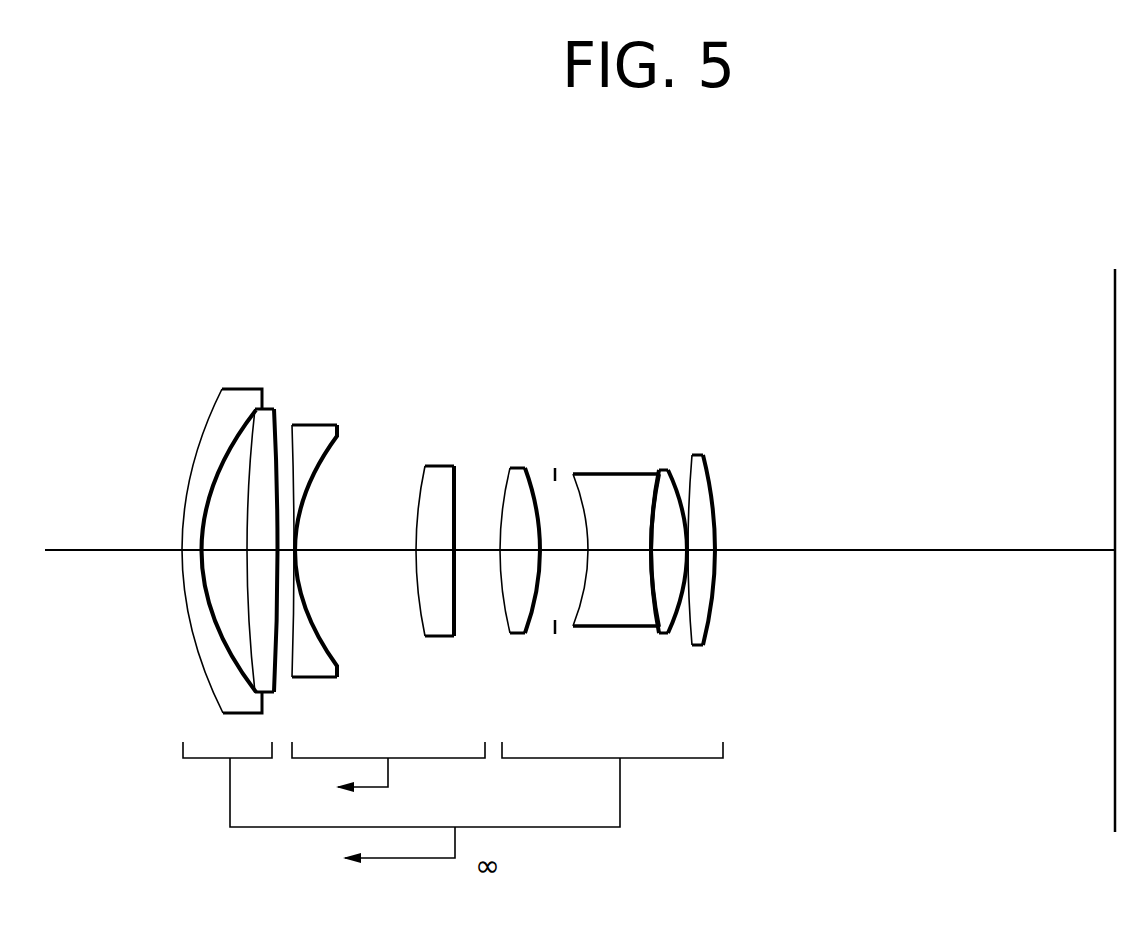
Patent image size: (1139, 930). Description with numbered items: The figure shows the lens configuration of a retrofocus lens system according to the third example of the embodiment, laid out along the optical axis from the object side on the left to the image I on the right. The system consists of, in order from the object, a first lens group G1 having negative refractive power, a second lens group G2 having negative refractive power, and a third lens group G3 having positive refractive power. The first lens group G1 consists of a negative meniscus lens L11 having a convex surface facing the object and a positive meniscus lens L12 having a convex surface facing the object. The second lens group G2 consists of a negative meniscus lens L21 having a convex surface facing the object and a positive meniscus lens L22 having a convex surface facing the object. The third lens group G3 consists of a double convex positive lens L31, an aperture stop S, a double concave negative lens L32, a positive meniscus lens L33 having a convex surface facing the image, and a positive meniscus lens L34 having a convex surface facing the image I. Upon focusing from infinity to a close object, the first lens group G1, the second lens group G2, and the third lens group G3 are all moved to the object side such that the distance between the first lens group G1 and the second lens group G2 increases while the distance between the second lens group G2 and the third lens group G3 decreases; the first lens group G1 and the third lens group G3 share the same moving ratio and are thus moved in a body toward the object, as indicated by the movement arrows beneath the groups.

The negative meniscus lens L11 is at (226, 388).
The positive meniscus lens L12 is at (265, 408).
The negative meniscus lens L21 is at (317, 425).
The positive meniscus lens L22 is at (435, 465).
The double convex positive lens L31 is at (515, 467).
The double concave negative lens L32 is at (605, 473).
The positive meniscus lens L33 is at (663, 467).
The positive meniscus lens L34 is at (698, 453).
The aperture stop S is at (555, 468).
The image I is at (1114, 345).
The first lens group G1 is at (231, 773).
The second lens group G2 is at (389, 776).
The third lens group G3 is at (612, 773).